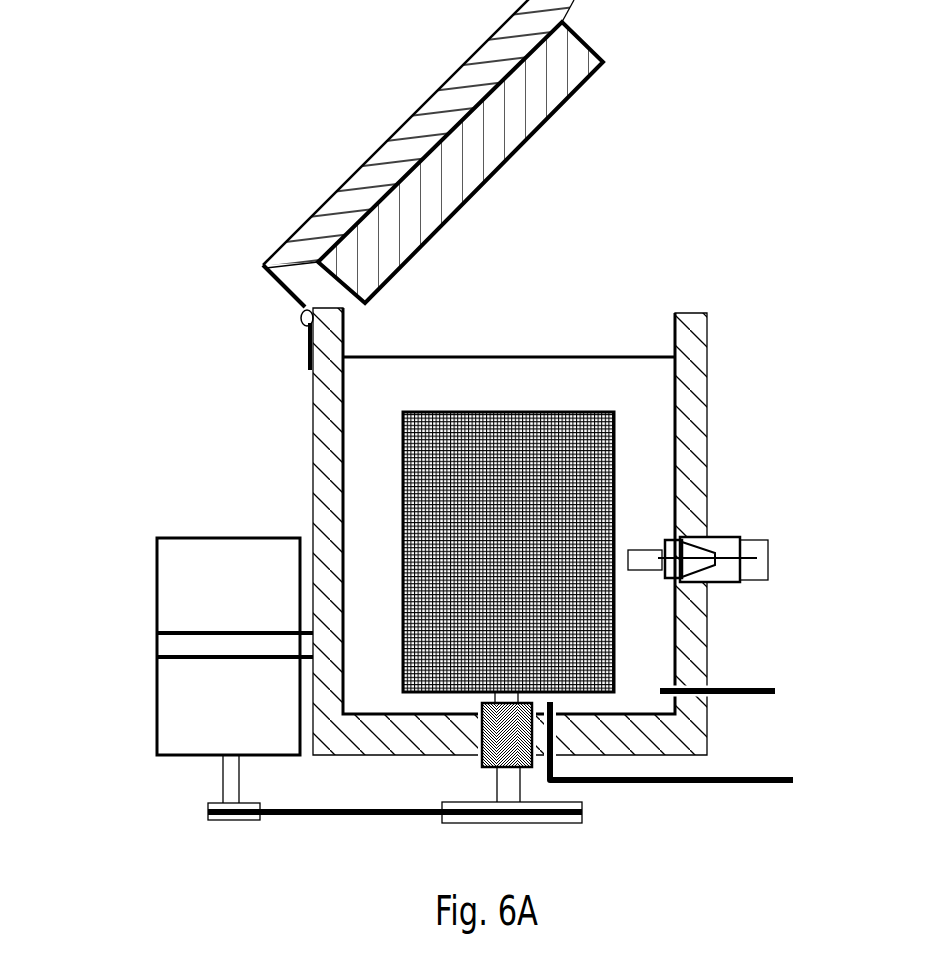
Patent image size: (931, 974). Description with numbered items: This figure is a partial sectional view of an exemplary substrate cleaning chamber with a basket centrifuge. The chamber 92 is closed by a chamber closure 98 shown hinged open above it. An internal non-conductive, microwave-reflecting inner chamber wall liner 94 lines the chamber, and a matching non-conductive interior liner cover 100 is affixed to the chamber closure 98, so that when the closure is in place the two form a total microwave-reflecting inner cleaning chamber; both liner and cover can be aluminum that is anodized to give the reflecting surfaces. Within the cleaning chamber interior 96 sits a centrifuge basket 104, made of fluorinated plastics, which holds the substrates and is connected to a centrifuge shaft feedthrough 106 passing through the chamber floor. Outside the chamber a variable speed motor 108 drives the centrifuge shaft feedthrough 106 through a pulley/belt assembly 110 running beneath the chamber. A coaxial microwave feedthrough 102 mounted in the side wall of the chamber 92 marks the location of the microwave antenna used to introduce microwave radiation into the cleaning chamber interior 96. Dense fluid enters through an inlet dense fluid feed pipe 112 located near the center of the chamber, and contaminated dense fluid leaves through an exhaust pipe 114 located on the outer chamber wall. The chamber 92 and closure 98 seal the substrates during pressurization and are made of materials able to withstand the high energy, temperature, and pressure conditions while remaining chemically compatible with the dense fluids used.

The chamber 92 is at (698, 402).
The inner chamber wall liner 94 is at (628, 356).
The cleaning chamber interior 96 is at (460, 372).
The chamber closure 98 is at (432, 122).
The interior liner cover 100 is at (527, 147).
The coaxial microwave feedthrough 102 is at (725, 548).
The centrifuge basket 104 is at (400, 465).
The centrifuge shaft feedthrough 106 is at (505, 783).
The variable speed motor 108 is at (185, 598).
The pulley/belt assembly 110 is at (393, 828).
The inlet dense fluid feed pipe 112 is at (730, 778).
The contaminated dense fluid exhaust pipe 114 is at (737, 687).